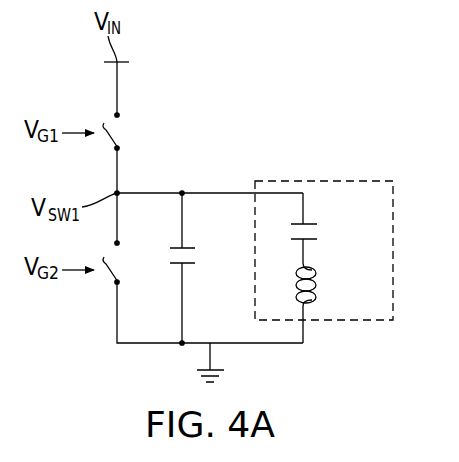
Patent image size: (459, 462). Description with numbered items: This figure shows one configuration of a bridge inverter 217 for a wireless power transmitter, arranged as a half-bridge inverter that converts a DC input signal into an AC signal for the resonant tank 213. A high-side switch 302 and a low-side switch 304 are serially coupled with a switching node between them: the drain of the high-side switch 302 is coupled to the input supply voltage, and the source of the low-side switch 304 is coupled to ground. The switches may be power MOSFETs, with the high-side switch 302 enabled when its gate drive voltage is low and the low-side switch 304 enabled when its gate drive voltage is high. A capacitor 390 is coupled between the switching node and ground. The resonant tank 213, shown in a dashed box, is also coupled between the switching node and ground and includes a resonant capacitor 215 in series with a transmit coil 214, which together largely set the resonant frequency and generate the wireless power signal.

The bridge inverter 217 is at (249, 69).
The high-side switch 302 is at (108, 147).
The low-side switch 304 is at (108, 281).
The capacitor 390 is at (196, 247).
The resonant tank 213 is at (322, 179).
The resonant capacitor 215 is at (318, 223).
The transmit coil 214 is at (318, 291).